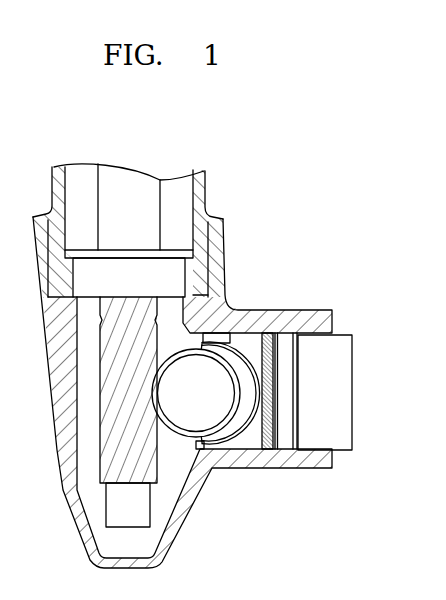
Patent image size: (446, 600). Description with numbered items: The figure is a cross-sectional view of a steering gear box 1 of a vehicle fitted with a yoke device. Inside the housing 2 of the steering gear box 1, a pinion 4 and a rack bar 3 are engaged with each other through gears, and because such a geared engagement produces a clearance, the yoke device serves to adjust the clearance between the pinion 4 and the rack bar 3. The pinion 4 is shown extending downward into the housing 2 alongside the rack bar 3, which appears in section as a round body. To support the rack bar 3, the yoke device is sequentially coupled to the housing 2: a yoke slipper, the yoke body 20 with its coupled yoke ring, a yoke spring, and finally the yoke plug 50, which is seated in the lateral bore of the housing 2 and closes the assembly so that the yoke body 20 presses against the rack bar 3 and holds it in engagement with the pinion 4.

The steering gear box 1 is at (215, 366).
The housing 2 is at (303, 463).
The rack bar 3 is at (205, 400).
The pinion 4 is at (115, 462).
The yoke body 20 is at (243, 437).
The yoke plug 50 is at (338, 403).